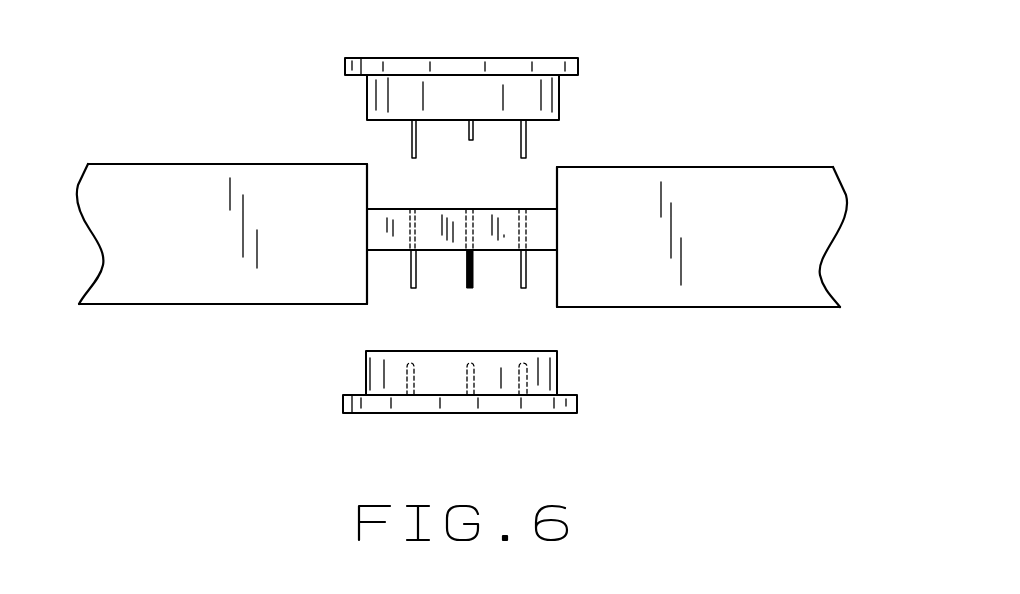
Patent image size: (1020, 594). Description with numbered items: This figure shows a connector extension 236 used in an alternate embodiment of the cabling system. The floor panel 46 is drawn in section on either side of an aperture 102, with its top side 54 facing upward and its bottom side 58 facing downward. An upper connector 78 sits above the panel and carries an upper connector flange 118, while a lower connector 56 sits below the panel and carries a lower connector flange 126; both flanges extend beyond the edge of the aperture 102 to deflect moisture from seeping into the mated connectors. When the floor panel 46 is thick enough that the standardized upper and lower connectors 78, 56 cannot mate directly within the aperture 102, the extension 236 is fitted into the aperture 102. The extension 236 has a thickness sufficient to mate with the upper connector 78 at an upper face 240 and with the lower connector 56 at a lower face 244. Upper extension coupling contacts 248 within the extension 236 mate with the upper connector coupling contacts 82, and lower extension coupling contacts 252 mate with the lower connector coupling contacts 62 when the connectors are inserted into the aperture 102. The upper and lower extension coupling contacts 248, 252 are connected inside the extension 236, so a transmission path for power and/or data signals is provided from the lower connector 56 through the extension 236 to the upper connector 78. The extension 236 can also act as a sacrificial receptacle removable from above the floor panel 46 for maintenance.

The floor panel 46 is at (182, 257).
The top side 54 is at (182, 164).
The lower connector 56 is at (372, 375).
The bottom side 58 is at (268, 300).
The lower connector coupling contact 62 is at (414, 377).
The upper connector 78 is at (547, 90).
The upper connector coupling contact 82 is at (416, 133).
The aperture 102 is at (397, 192).
The upper connector flange 118 is at (353, 66).
The lower connector flange 126 is at (563, 405).
The connector extension 236 is at (391, 252).
The upper face 240 is at (534, 209).
The lower face 244 is at (543, 252).
The upper extension coupling contact 248 is at (467, 235).
The lower extension coupling contact 252 is at (415, 266).